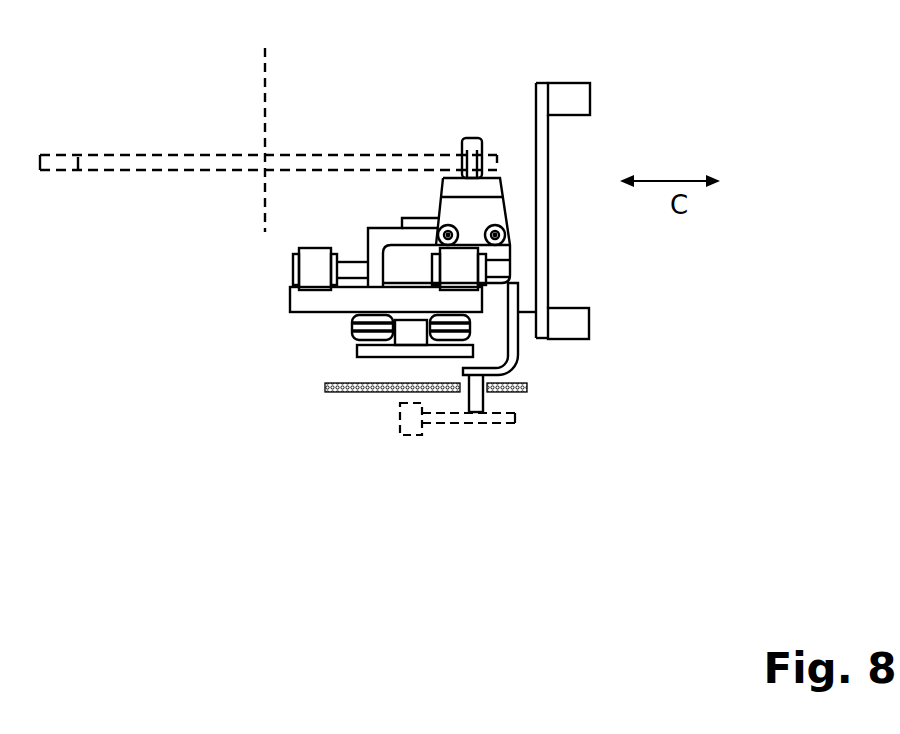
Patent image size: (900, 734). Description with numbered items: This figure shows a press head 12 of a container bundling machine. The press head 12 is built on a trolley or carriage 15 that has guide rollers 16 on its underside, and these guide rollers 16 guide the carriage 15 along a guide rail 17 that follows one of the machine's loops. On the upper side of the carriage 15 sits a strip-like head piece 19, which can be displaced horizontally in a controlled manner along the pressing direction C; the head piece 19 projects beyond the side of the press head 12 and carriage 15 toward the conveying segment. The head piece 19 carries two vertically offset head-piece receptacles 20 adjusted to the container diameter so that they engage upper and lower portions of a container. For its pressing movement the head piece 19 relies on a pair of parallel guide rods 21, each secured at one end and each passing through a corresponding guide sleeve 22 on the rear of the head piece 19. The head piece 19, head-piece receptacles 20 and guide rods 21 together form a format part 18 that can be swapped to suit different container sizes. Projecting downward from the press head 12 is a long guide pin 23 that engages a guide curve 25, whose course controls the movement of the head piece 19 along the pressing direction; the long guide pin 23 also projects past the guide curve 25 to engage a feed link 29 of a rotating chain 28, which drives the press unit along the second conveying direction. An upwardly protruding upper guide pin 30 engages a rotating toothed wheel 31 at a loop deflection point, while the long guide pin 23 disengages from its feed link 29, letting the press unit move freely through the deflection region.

The press head 12 is at (381, 196).
The carriage 15 is at (303, 298).
The guide rollers 16 is at (352, 333).
The guide rail 17 is at (410, 332).
The format part 18 is at (640, 243).
The head piece 19 is at (548, 248).
The head-piece receptacles 20 is at (580, 100).
The guide rods 21 is at (357, 260).
The guide sleeve 22 is at (294, 270).
The long guide pin 23 is at (470, 407).
The guide curve 25 is at (493, 400).
The chain 28 is at (400, 432).
The feed link 29 is at (488, 425).
The upper guide pin 30 is at (468, 148).
The toothed wheel 31 is at (218, 160).